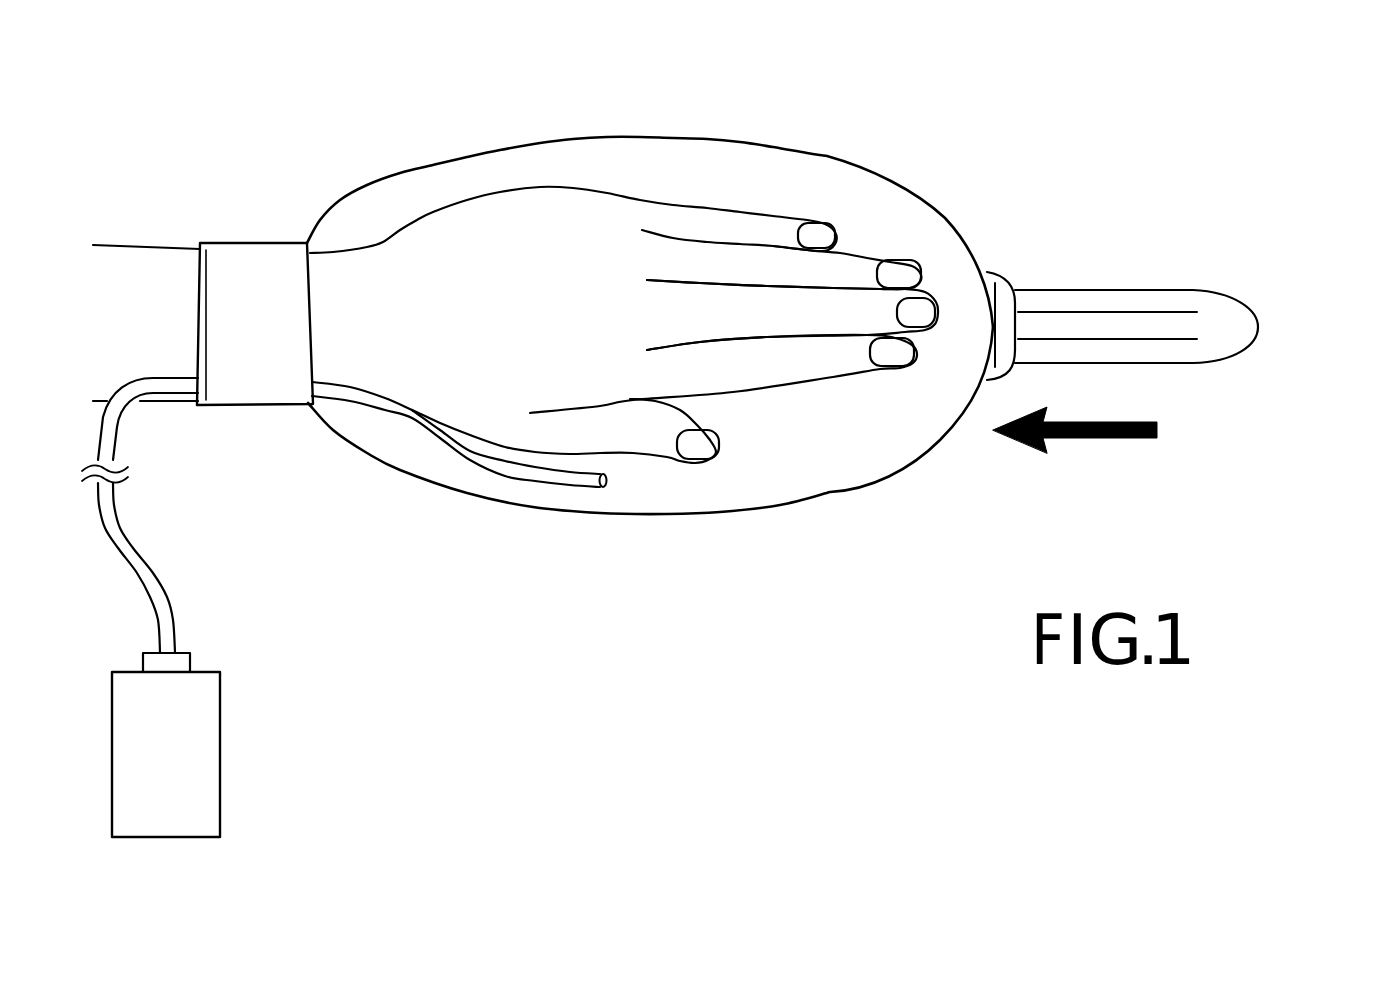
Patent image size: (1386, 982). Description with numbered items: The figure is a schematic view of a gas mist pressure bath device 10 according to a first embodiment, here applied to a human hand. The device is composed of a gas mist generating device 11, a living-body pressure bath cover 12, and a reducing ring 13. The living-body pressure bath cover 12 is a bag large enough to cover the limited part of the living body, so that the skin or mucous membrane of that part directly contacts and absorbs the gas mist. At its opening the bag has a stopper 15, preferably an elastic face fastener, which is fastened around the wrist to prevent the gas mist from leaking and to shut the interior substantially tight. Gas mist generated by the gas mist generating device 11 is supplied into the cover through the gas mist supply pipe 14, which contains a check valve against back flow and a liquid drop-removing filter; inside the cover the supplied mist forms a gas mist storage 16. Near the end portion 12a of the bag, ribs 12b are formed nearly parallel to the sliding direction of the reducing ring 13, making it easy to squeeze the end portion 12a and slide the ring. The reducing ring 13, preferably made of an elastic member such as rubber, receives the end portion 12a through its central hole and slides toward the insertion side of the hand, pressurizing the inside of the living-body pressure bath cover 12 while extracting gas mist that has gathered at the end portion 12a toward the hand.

The gas mist pressure bath device 10 is at (727, 439).
The gas mist generating device 11 is at (202, 668).
The living-body pressure bath cover 12 is at (790, 143).
The end portion 12a is at (1257, 318).
The ribs 12b is at (1117, 307).
The reducing ring 13 is at (993, 272).
The gas mist supply pipe 14 is at (547, 488).
The stopper 15 is at (248, 242).
The gas mist storage 16 is at (815, 463).